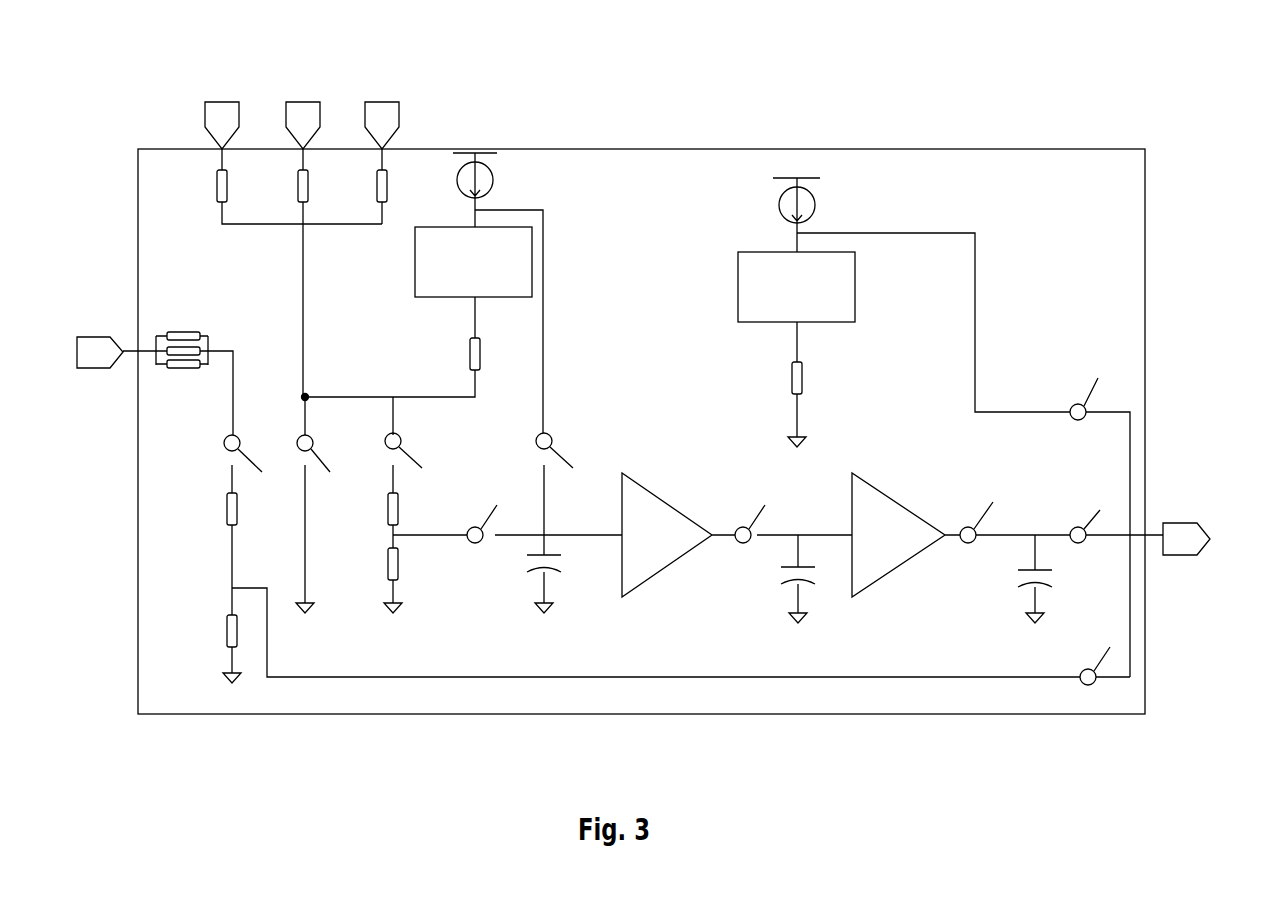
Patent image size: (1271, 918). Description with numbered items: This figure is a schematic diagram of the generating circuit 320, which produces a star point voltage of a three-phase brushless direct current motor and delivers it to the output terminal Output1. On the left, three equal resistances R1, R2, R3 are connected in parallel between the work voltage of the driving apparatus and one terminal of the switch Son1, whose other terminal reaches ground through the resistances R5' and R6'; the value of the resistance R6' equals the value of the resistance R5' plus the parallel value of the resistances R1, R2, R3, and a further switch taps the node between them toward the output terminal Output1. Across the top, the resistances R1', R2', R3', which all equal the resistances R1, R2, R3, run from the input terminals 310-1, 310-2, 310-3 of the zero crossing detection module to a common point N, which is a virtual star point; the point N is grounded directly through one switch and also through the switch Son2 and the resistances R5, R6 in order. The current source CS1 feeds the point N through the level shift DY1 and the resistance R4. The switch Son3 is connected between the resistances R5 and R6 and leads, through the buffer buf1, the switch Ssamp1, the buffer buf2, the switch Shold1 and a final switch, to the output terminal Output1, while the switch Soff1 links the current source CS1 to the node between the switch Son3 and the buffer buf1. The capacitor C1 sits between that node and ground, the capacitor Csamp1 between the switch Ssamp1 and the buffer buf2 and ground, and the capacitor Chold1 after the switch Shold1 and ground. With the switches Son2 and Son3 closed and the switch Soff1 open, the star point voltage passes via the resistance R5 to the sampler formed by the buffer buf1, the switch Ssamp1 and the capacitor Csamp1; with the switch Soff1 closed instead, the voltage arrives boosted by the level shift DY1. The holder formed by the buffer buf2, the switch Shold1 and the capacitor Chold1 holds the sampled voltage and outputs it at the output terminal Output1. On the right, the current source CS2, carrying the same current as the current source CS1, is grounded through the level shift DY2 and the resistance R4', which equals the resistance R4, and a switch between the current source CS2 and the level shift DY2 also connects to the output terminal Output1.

The generating circuit 320 is at (681, 60).
The input terminal 310-1 is at (222, 109).
The input terminal 310-2 is at (303, 109).
The input terminal 310-3 is at (382, 109).
The resistance R1' is at (280, 186).
The resistance R2' is at (285, 273).
The resistance R3' is at (366, 186).
The current source CS1 is at (482, 190).
The current source CS2 is at (783, 215).
The level shift DY1 is at (473, 262).
The level shift DY2 is at (796, 287).
The resistance R4 is at (405, 347).
The resistance R4' is at (810, 384).
The resistance R1 is at (182, 301).
The resistance R2 is at (182, 325).
The resistance R3 is at (182, 339).
The switch Son1 is at (214, 453).
The switch Son2 is at (421, 432).
The switch Son3 is at (507, 520).
The switch Soff1 is at (567, 493).
The resistance R5 is at (374, 506).
The resistance R6 is at (376, 580).
The resistance R5' is at (216, 540).
The resistance R6' is at (217, 649).
The capacitor C1 is at (529, 584).
The buffer buf1 is at (678, 535).
The buffer buf2 is at (906, 535).
The switch Ssamp1 is at (777, 507).
The capacitor Csamp1 is at (751, 579).
The switch Shold1 is at (995, 506).
The capacitor Chold1 is at (994, 579).
The output terminal Output1 is at (1181, 530).